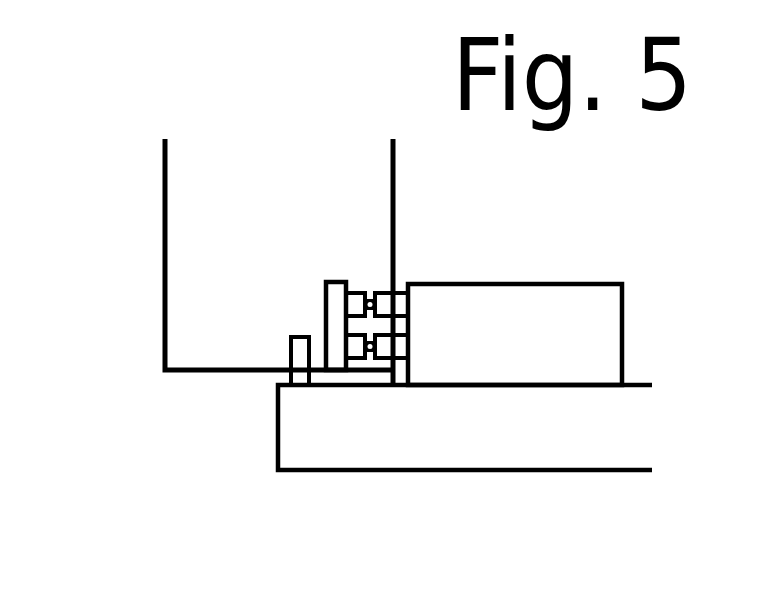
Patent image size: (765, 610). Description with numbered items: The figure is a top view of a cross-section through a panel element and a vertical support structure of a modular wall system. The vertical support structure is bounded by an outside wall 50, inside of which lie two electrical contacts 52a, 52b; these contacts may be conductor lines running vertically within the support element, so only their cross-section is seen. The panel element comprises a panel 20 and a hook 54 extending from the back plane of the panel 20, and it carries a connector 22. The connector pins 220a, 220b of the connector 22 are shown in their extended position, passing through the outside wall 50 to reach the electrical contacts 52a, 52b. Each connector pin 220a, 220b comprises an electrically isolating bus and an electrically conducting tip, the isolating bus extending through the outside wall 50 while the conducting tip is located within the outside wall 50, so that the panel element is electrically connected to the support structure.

The panel 20 is at (462, 472).
The connector 22 is at (468, 284).
The outside wall 50 is at (165, 223).
The electrical contact 52a is at (358, 292).
The electrical contact 52b is at (360, 348).
The hook 54 is at (291, 355).
The connector pin 220a is at (370, 292).
The connector pin 220b is at (370, 359).